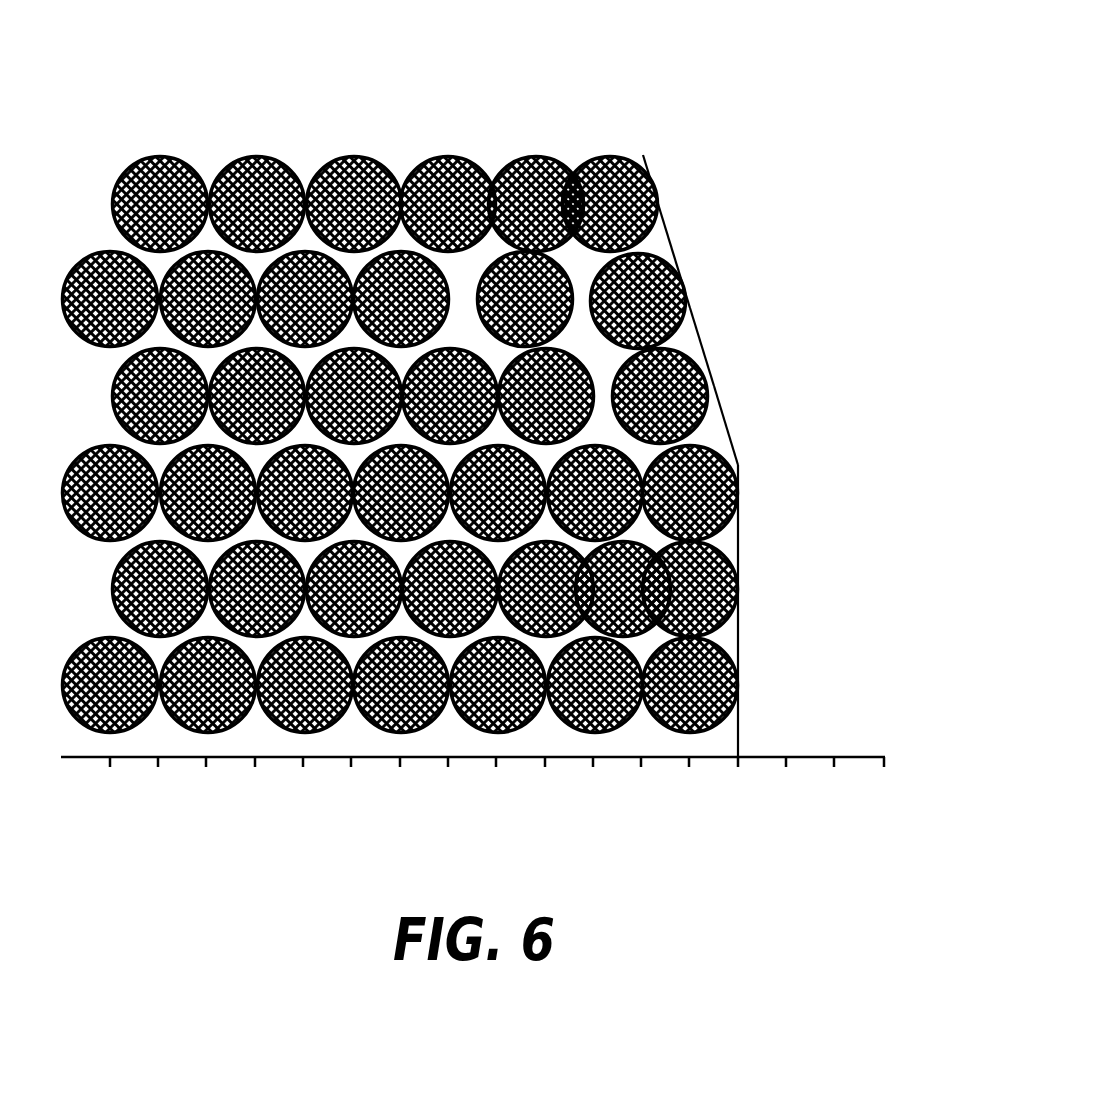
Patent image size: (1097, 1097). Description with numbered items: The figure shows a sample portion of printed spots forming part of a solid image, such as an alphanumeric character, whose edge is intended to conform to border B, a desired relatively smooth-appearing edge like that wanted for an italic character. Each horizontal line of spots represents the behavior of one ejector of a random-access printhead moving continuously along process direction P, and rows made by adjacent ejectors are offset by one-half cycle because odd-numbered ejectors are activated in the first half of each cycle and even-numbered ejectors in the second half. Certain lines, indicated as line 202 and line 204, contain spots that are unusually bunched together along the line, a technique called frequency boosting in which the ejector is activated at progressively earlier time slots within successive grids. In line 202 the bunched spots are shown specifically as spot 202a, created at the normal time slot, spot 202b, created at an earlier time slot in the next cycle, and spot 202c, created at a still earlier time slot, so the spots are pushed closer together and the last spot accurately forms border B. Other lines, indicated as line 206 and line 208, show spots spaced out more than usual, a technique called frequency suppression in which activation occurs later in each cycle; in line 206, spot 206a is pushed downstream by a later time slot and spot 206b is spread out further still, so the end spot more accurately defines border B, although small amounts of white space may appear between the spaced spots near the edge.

The process direction P is at (153, 77).
The border B is at (645, 148).
The line of spots 202 is at (675, 168).
The spot 202a is at (440, 148).
The spot 202b is at (525, 148).
The spot 202c is at (600, 148).
The line of spots 204 is at (742, 608).
The line of spots 206 is at (706, 314).
The spot 206a is at (652, 268).
The spot 206b is at (558, 264).
The line of spots 208 is at (735, 409).